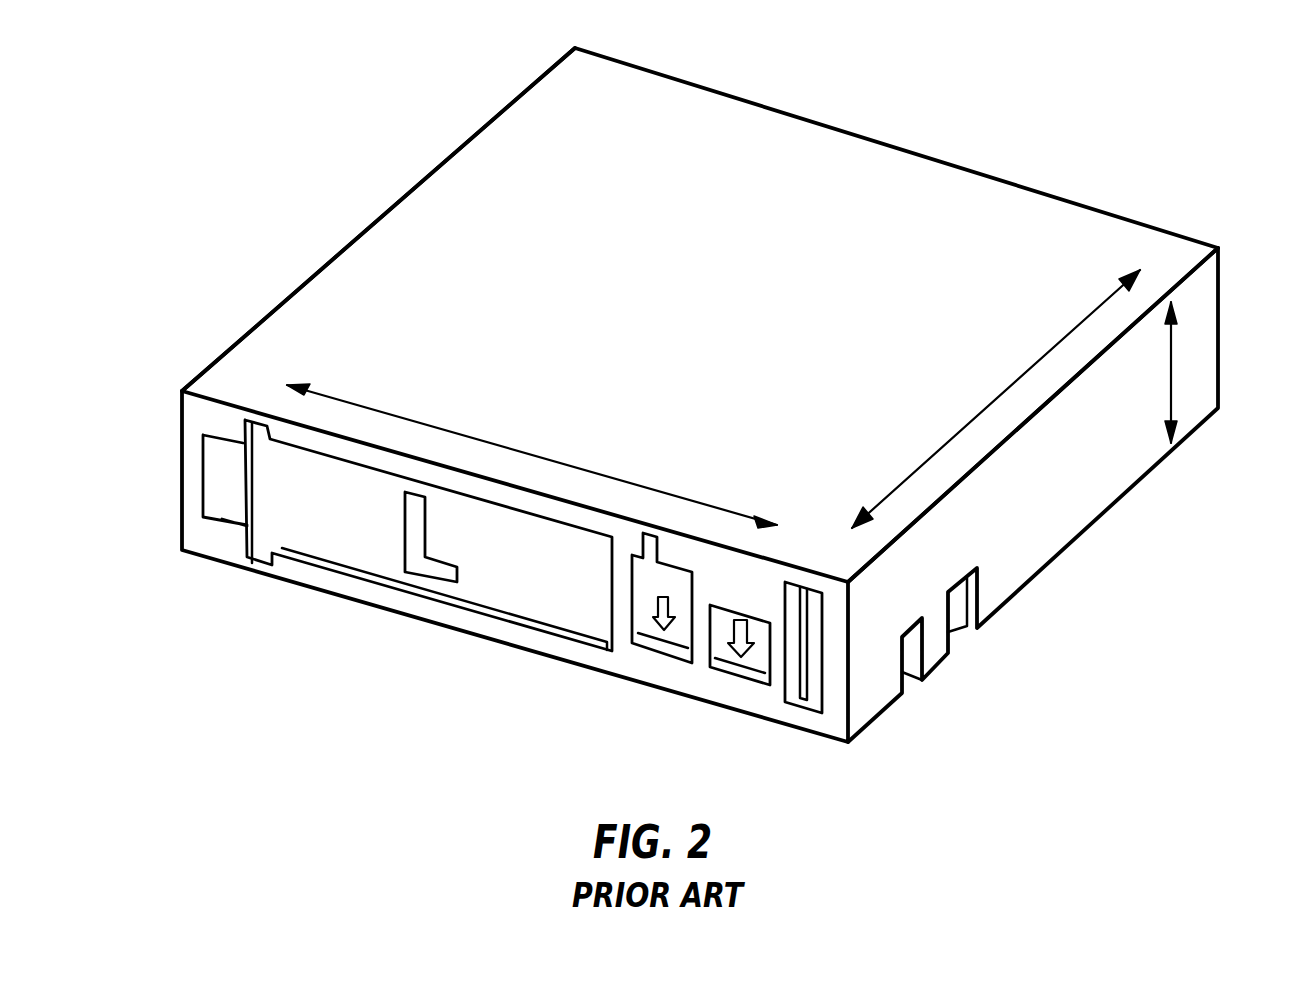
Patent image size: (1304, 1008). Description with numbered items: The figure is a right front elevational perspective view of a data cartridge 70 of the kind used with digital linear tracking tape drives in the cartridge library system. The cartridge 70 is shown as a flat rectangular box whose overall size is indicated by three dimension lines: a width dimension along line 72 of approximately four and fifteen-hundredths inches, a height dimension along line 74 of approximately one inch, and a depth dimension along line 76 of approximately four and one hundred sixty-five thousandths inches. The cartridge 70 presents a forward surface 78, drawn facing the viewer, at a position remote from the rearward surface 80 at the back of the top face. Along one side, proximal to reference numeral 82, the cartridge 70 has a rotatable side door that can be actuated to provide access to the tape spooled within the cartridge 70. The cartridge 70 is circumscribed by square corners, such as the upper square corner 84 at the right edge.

The cartridge 70 is at (457, 149).
The width dimension line 72 is at (512, 450).
The height dimension line 74 is at (1171, 366).
The depth dimension line 76 is at (1022, 376).
The forward surface 78 is at (488, 627).
The rearward surface 80 is at (900, 149).
The rotatable side door location 82 is at (322, 266).
The upper square corner 84 is at (1013, 432).